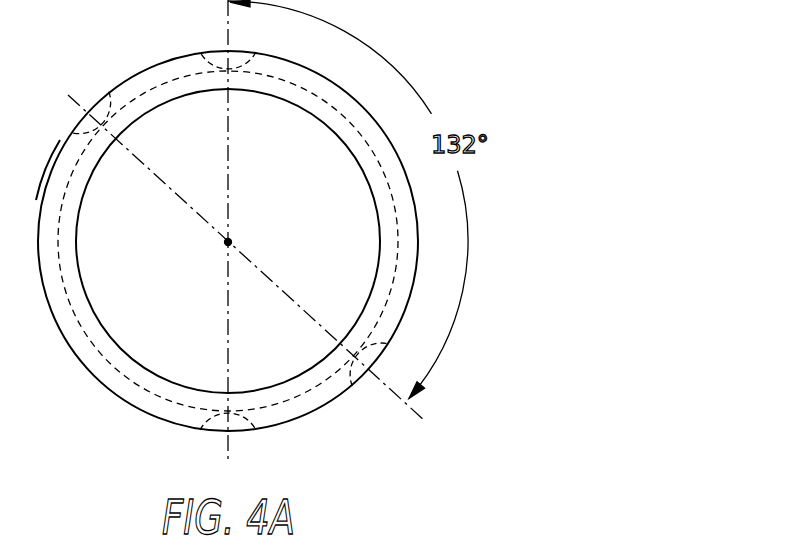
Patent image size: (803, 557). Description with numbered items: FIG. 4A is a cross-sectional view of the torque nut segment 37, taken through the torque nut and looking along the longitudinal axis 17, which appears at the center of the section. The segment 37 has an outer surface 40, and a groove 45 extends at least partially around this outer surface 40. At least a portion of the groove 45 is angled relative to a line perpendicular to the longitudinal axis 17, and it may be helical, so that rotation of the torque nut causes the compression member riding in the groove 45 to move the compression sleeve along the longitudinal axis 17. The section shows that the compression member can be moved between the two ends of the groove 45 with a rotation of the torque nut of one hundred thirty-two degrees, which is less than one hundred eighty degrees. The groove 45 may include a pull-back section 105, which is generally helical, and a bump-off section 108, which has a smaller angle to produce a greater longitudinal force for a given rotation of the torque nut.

The longitudinal axis 17 is at (228, 242).
The segment 37 is at (170, 70).
The outer surface 40 is at (117, 85).
The groove 45 is at (385, 132).
The pull-back section 105 is at (343, 98).
The bump-off section 108 is at (270, 48).